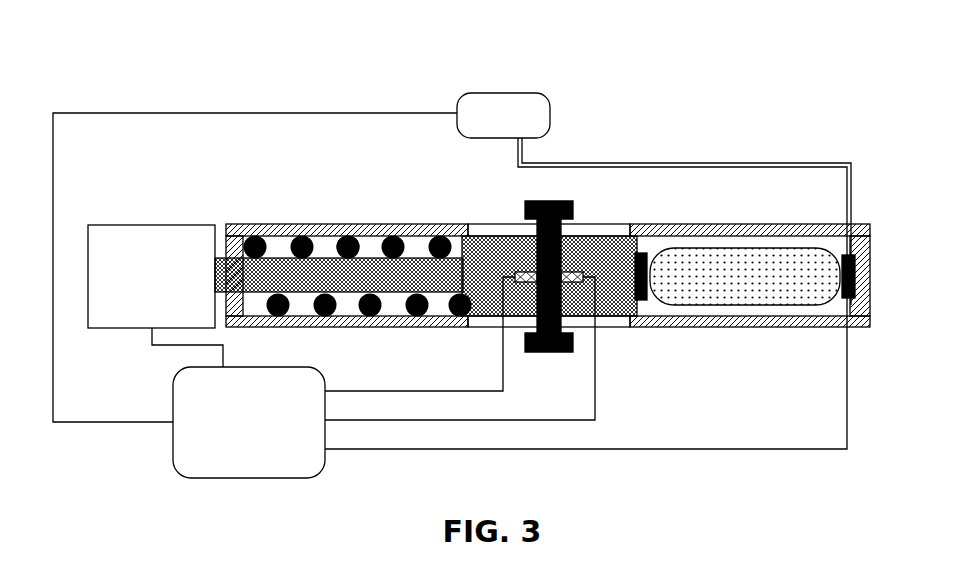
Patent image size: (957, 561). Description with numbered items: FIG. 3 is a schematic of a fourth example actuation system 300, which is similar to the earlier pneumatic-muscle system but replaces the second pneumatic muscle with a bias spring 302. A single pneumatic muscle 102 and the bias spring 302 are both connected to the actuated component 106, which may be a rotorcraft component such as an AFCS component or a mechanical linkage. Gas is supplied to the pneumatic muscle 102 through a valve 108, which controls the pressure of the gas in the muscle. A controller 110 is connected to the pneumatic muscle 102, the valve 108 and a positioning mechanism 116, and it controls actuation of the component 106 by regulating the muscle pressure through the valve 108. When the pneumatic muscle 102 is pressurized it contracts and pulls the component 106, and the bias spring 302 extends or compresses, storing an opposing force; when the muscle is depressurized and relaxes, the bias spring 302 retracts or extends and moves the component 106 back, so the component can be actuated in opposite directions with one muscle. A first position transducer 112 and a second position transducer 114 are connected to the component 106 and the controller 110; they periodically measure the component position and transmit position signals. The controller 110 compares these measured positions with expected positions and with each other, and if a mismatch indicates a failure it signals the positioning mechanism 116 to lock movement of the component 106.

The actuation system 300 is at (198, 40).
The bias spring 302 is at (337, 247).
The pneumatic muscle 102 is at (719, 286).
The actuated component 106 is at (550, 200).
The valve 108 is at (503, 115).
The controller 110 is at (249, 422).
The first position transducer 112 is at (583, 272).
The second position transducer 114 is at (517, 272).
The positioning mechanism 116 is at (151, 276).